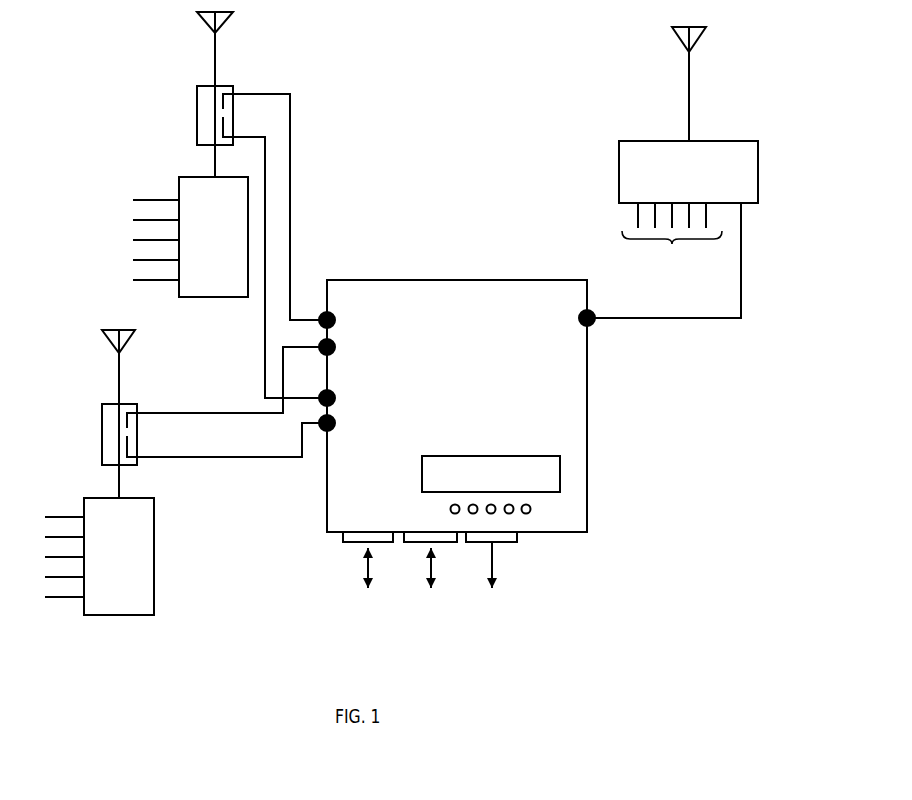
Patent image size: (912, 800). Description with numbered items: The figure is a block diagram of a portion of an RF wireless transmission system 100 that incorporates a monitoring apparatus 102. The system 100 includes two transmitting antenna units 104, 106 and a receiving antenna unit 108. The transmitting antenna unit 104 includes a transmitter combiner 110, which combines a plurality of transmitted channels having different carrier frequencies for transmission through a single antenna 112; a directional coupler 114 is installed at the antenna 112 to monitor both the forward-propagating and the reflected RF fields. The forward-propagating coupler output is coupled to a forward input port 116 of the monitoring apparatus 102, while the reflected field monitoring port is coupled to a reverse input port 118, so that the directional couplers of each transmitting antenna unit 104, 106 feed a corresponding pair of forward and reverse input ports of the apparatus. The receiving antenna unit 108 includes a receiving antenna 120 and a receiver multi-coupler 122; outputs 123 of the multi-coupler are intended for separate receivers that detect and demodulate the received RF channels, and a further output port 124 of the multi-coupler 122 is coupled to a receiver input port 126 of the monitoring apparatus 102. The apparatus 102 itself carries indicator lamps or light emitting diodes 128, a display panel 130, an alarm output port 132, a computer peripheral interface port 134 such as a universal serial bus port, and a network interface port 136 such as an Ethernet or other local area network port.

The RF wireless transmission system 100 is at (494, 106).
The monitoring apparatus 102 is at (588, 404).
The transmitting antenna unit 104 is at (66, 624).
The transmitting antenna unit 106 is at (163, 134).
The receiving antenna unit 108 is at (745, 103).
The transmitter combiner 110 is at (134, 617).
The antenna 112 is at (117, 373).
The directional coupler 114 is at (102, 427).
The forward input port 116 is at (316, 441).
The reverse input port 118 is at (313, 298).
The receiving antenna 120 is at (689, 80).
The receiver multi-coupler 122 is at (758, 168).
The outputs 123 is at (672, 236).
The output port 124 is at (749, 220).
The receiver input port 126 is at (600, 327).
The light emitting diodes 128 is at (548, 510).
The display panel 130 is at (574, 473).
The alarm output port 132 is at (505, 559).
The computer peripheral interface port 134 is at (349, 557).
The network interface port 136 is at (415, 554).